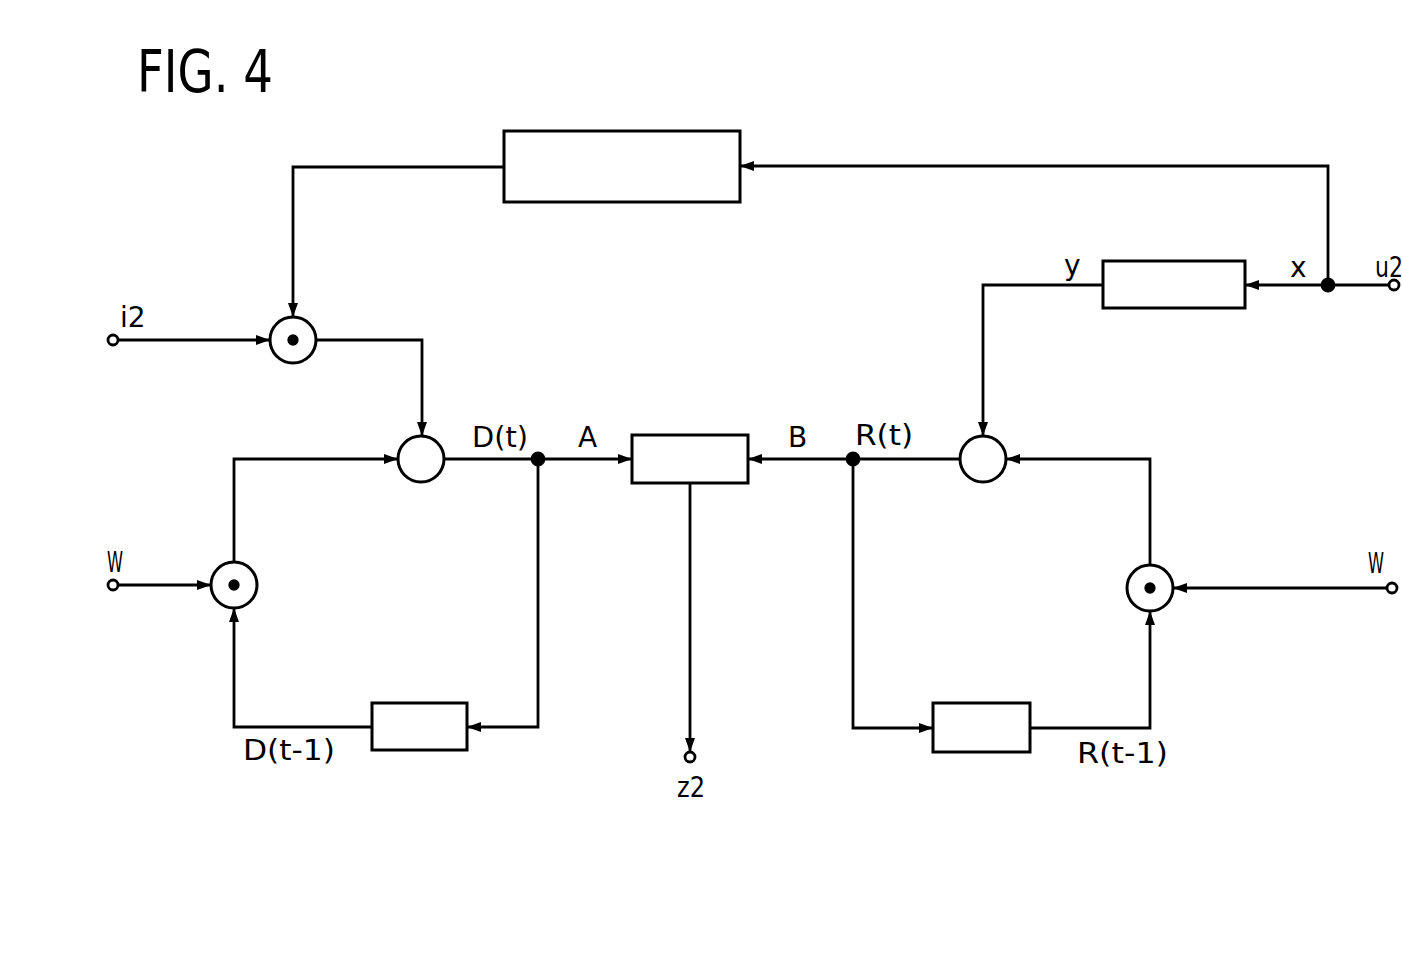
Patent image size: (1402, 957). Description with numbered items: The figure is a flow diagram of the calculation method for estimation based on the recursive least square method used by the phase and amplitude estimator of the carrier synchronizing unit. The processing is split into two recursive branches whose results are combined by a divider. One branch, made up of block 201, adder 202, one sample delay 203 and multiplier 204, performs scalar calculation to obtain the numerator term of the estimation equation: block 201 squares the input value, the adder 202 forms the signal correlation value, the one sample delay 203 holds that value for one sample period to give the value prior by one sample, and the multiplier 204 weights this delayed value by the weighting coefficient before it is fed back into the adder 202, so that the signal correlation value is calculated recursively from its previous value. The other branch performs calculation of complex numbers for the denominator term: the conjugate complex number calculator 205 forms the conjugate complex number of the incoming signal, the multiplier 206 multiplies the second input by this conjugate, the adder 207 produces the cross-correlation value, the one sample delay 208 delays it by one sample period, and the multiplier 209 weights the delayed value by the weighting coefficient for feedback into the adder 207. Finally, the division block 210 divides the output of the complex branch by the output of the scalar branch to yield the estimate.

The block 201 is at (1170, 308).
The adder 202 is at (980, 482).
The one sample delay 203 is at (1000, 752).
The multiplier 204 is at (1167, 570).
The conjugate complex number calculator 205 is at (652, 202).
The multiplier 206 is at (310, 324).
The adder 207 is at (424, 482).
The one sample delay 208 is at (427, 750).
The multiplier 209 is at (217, 601).
The division block 210 is at (692, 435).